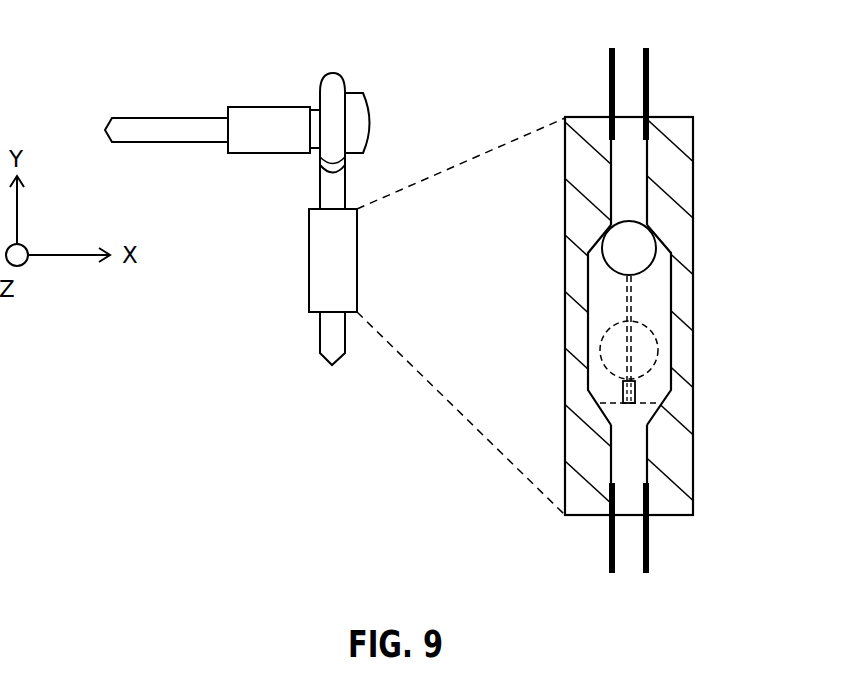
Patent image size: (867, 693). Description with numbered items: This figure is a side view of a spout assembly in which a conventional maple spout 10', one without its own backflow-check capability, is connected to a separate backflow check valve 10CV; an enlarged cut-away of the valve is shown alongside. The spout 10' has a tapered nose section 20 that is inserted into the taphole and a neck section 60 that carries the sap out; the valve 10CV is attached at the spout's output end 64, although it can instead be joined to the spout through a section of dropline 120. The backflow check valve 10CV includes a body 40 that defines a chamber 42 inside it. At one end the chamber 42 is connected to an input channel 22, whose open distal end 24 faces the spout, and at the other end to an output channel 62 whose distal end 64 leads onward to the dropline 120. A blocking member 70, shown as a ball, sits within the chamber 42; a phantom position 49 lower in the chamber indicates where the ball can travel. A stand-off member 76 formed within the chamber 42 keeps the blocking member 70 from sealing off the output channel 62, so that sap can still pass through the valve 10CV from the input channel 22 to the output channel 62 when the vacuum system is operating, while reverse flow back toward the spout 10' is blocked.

The nose section 20 is at (126, 94).
The spout 10' is at (266, 95).
The neck section 60 is at (312, 194).
The backflow check valve 10CV is at (309, 243).
The dropline 120 is at (320, 336).
The open distal end 64 is at (612, 140).
The open distal end 24 is at (663, 117).
The input channel 22 is at (635, 157).
The body 40 is at (565, 210).
The chamber 42 is at (598, 292).
The blocking member 70 is at (651, 264).
The ball lower position 49 is at (629, 304).
The stand-off member 76 is at (635, 391).
The output channel 62 is at (635, 452).